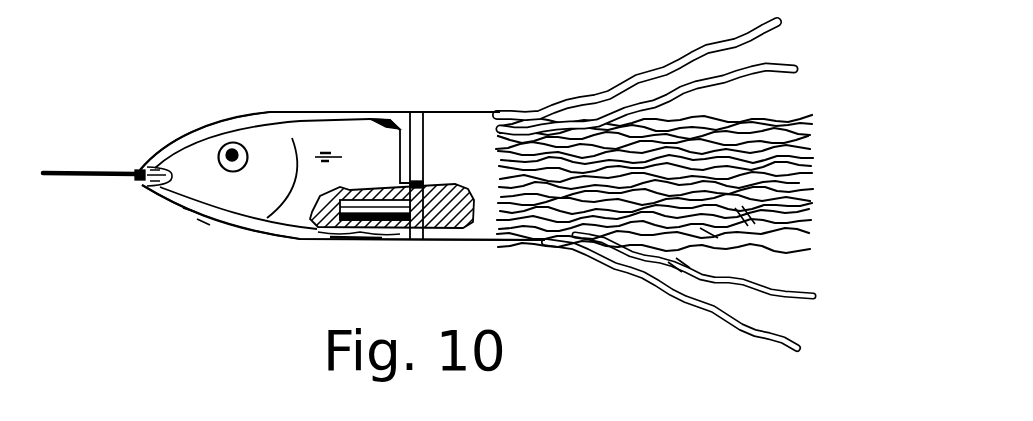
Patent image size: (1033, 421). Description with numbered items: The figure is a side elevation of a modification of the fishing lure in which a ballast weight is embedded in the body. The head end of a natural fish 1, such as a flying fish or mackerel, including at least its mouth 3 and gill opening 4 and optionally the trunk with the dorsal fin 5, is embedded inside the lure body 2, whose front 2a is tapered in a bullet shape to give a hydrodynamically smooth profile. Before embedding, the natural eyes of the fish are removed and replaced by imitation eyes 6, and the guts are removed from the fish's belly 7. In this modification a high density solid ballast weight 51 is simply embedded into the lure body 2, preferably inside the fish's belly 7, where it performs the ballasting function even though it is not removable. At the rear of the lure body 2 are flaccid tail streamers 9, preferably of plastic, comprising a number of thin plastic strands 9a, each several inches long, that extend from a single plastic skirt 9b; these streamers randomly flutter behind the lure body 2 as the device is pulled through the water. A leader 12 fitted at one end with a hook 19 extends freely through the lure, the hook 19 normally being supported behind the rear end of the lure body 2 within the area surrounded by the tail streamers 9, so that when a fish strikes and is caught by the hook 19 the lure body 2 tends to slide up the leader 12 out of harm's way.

The natural fish 1 is at (198, 163).
The lure body 2 is at (271, 108).
The front of the lure body 2a is at (167, 147).
The mouth 3 is at (160, 187).
The gill opening 4 is at (282, 203).
The dorsal fin 5 is at (380, 122).
The imitation eyes 6 is at (230, 146).
The fish's belly 7 is at (307, 222).
The tail streamers 9 is at (607, 90).
The plastic strands 9a is at (730, 80).
The skirt 9b is at (488, 115).
The leader 12 is at (92, 178).
The hook 19 is at (673, 270).
The ballast weight 51 is at (380, 212).